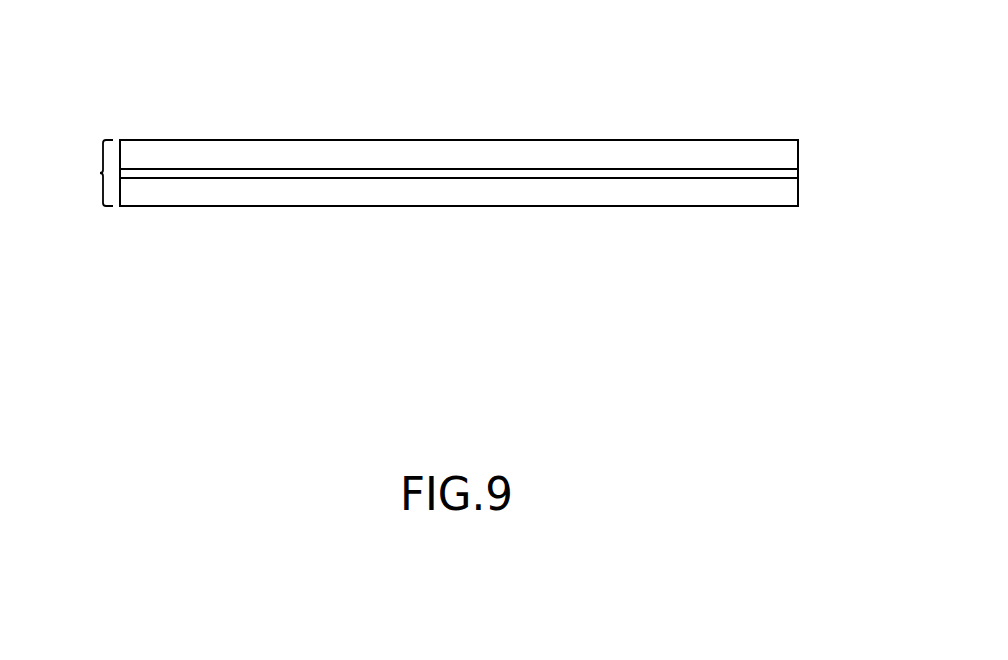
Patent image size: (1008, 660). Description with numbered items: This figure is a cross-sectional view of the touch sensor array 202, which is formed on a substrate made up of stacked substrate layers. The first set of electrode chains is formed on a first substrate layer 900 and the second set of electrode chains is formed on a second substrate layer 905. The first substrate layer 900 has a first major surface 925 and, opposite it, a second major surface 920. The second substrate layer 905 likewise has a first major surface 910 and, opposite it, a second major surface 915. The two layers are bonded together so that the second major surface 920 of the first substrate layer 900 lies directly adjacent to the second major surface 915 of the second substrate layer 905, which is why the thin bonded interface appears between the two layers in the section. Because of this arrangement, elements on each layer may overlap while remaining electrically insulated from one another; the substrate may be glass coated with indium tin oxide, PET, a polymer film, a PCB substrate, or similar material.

The touch sensor array 202 is at (100, 173).
The first substrate layer 900 is at (798, 188).
The second substrate layer 905 is at (798, 152).
The first major surface 910 is at (330, 139).
The second major surface 915 is at (322, 173).
The second major surface 920 is at (445, 174).
The first major surface 925 is at (468, 208).